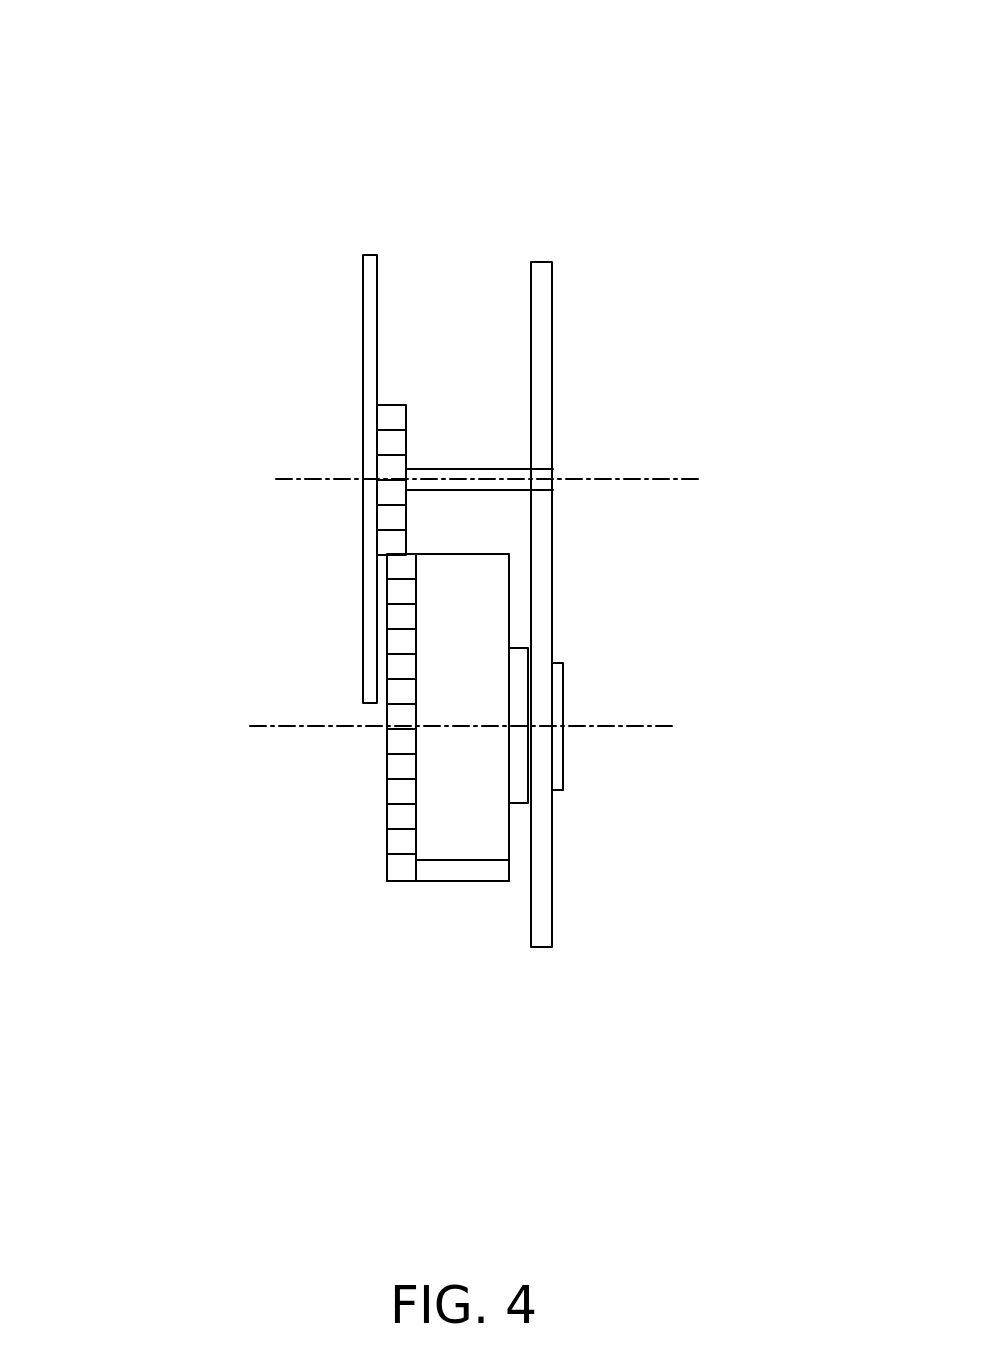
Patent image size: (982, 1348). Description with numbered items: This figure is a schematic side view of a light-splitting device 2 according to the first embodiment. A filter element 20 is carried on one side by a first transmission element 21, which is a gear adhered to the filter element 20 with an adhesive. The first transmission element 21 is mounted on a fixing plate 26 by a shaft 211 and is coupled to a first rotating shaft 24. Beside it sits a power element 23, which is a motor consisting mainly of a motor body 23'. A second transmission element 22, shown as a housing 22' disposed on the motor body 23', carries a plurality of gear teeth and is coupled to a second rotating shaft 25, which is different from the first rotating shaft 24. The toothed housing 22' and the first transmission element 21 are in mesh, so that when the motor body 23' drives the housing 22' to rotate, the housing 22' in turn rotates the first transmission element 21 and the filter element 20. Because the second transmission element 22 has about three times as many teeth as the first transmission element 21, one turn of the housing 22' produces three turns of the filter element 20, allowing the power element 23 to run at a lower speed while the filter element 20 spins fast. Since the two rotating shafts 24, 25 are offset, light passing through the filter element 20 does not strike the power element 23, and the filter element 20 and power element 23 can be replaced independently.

The light-splitting device 2 is at (300, 27).
The filter element 20 is at (370, 692).
The first transmission element 21 is at (392, 430).
The shaft 211 is at (508, 480).
The second transmission element 22 is at (249, 717).
The housing 22' is at (319, 904).
The power element 23 is at (514, 837).
The motor body 23' is at (462, 989).
The first rotating shaft 24 is at (687, 480).
The second rotating shaft 25 is at (660, 727).
The fixing plate 26 is at (552, 917).